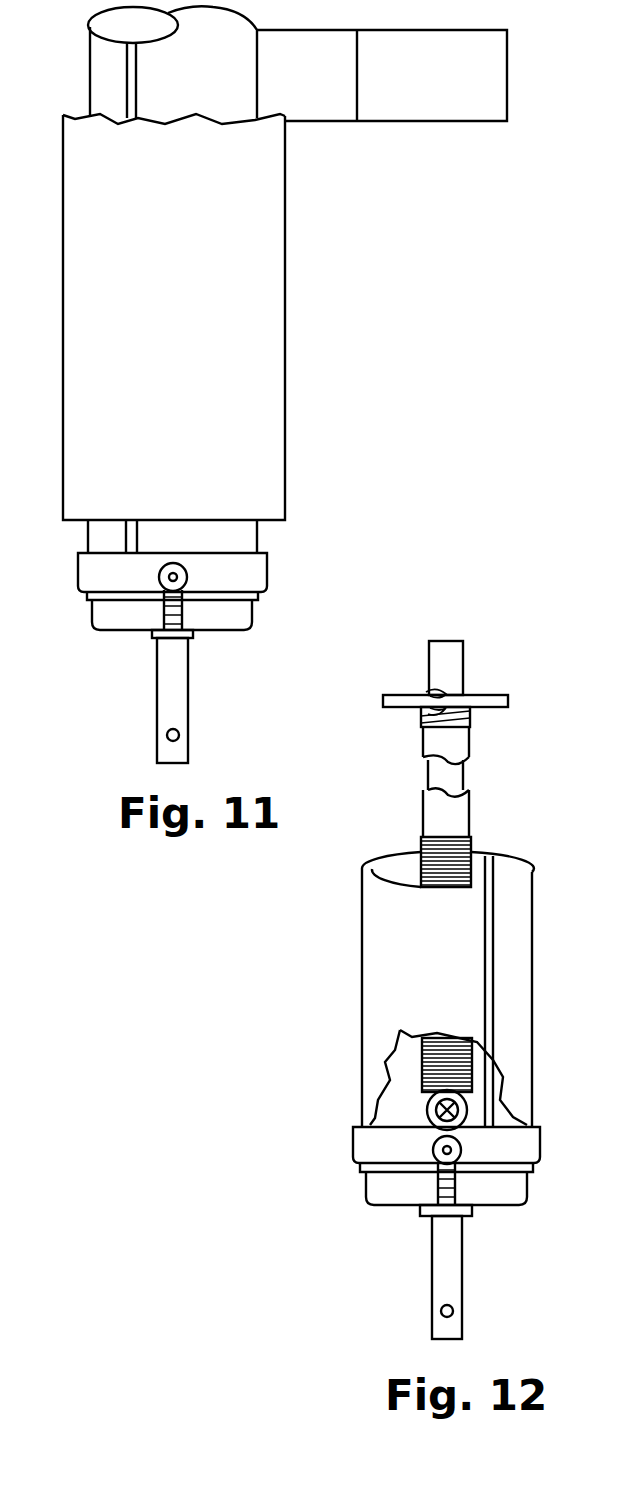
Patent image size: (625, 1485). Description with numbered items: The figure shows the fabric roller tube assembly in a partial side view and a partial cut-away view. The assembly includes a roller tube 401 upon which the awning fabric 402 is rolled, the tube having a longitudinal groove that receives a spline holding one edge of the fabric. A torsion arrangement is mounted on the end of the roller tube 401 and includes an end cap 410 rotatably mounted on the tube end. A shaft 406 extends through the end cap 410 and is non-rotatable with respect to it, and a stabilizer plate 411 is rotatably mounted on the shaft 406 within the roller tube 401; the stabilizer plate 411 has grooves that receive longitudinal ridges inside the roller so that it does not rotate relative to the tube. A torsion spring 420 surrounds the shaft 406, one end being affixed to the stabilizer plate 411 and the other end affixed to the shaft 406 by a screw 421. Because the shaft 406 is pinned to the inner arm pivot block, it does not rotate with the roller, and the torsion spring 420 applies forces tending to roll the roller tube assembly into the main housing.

In FIG. 11, the roller tube 401 is at (257, 533).
In FIG. 12, the roller tube 401 is at (362, 978).
In FIG. 11, the awning fabric 402 is at (285, 272).
In FIG. 11, the shaft 406 is at (157, 725).
In FIG. 12, the shaft 406 is at (433, 1272).
In FIG. 11, the end cap 410 is at (115, 618).
In FIG. 12, the end cap 410 is at (369, 1190).
In FIG. 12, the stabilizer plate 411 is at (487, 695).
In FIG. 12, the torsion spring 420 is at (470, 845).
In FIG. 12, the screw 421 is at (447, 1110).